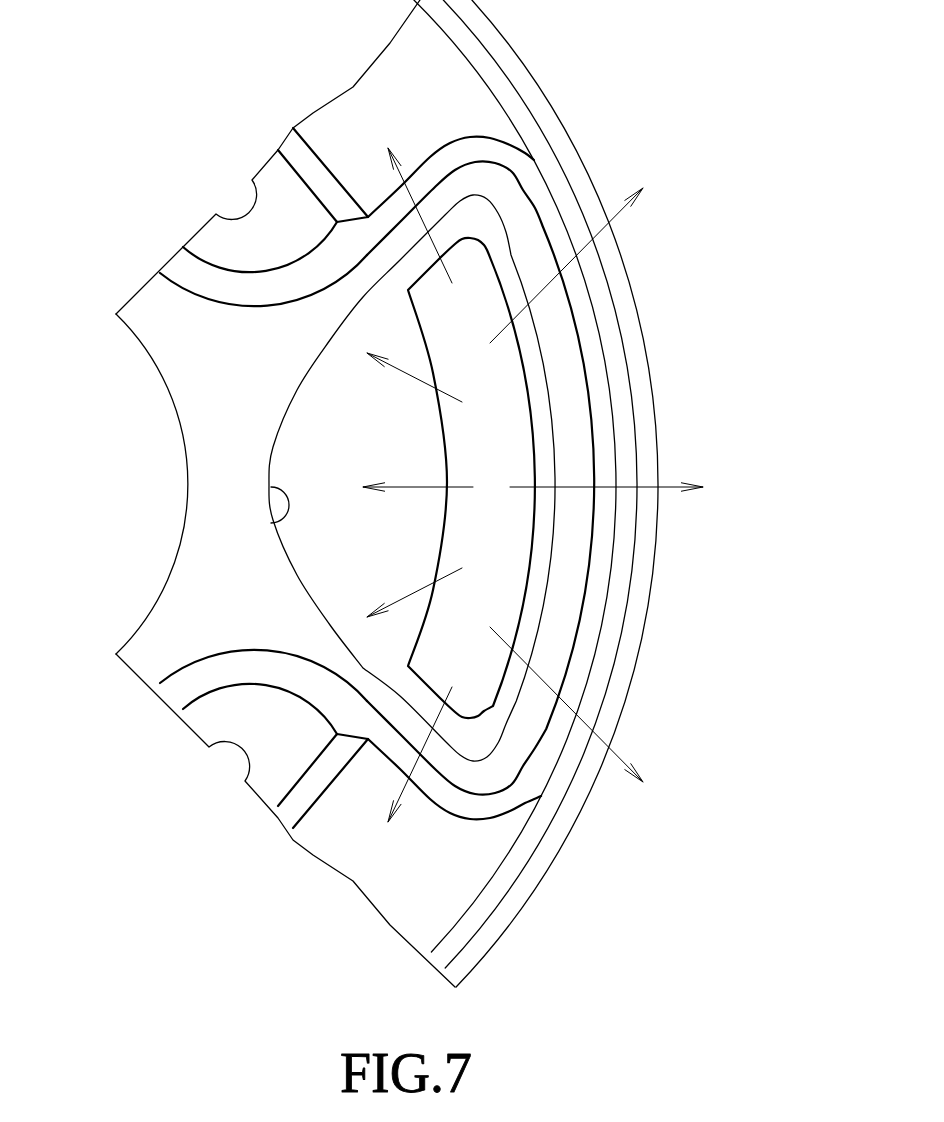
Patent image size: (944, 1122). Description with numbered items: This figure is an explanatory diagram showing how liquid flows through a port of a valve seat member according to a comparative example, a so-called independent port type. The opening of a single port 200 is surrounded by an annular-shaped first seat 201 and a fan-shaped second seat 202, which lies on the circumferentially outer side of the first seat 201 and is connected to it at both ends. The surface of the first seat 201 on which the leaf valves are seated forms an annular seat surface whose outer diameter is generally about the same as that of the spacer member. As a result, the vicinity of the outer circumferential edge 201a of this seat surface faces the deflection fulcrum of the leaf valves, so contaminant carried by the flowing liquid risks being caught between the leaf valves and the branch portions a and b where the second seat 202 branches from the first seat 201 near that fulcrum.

The port 200 is at (513, 428).
The first seat 201 is at (198, 395).
The outer circumferential edge 201a is at (273, 522).
The second seat 202 is at (515, 207).
The branch portion a is at (300, 322).
The branch portion b is at (280, 630).